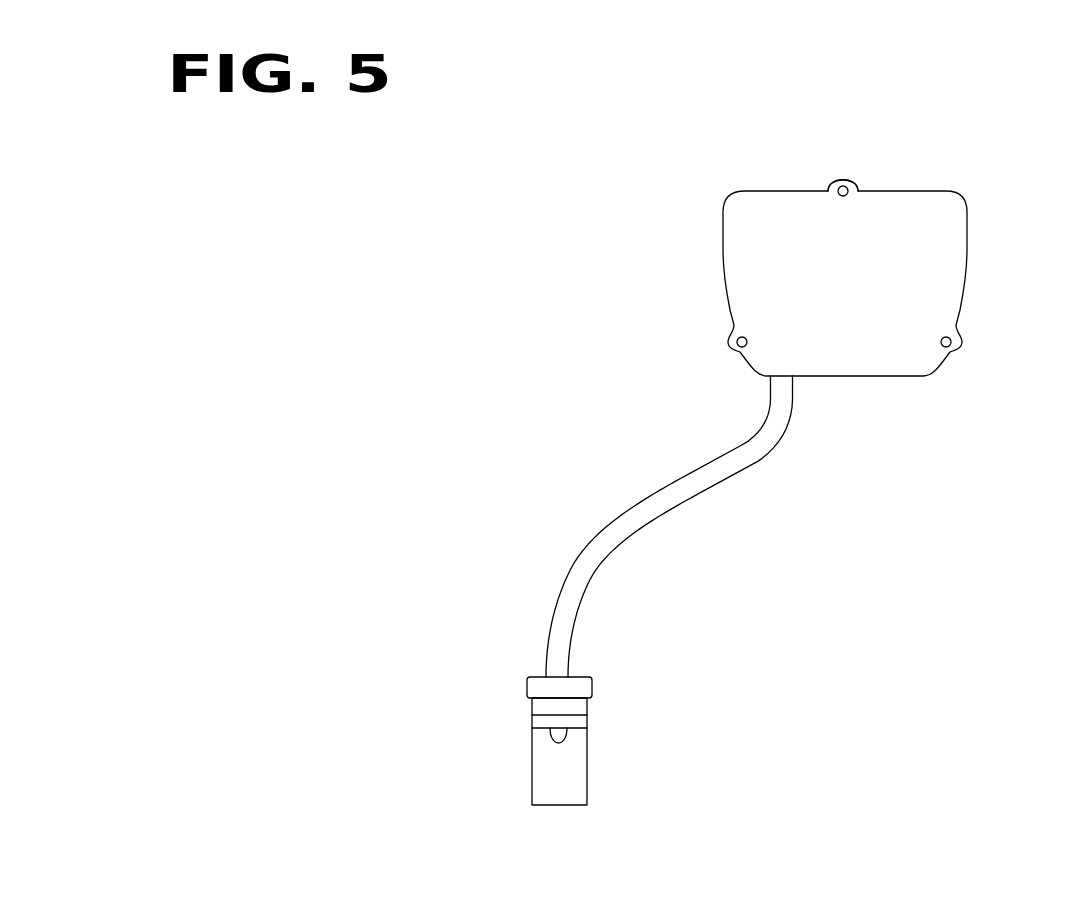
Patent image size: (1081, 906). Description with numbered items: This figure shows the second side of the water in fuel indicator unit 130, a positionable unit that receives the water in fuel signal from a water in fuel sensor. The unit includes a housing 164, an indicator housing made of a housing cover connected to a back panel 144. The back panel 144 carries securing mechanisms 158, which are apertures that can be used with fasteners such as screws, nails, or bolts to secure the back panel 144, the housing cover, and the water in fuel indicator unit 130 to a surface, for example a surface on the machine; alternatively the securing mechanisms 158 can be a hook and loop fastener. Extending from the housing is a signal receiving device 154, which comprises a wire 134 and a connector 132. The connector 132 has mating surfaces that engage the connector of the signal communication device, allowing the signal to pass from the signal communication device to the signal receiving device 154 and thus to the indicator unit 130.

The water in fuel indicator unit 130 is at (861, 252).
The connector 132 is at (587, 735).
The wire 134 is at (717, 485).
The back panel 144 is at (967, 250).
The signal receiving device 154 is at (644, 590).
The securing mechanisms 158 is at (838, 187).
The housing 164 is at (901, 158).